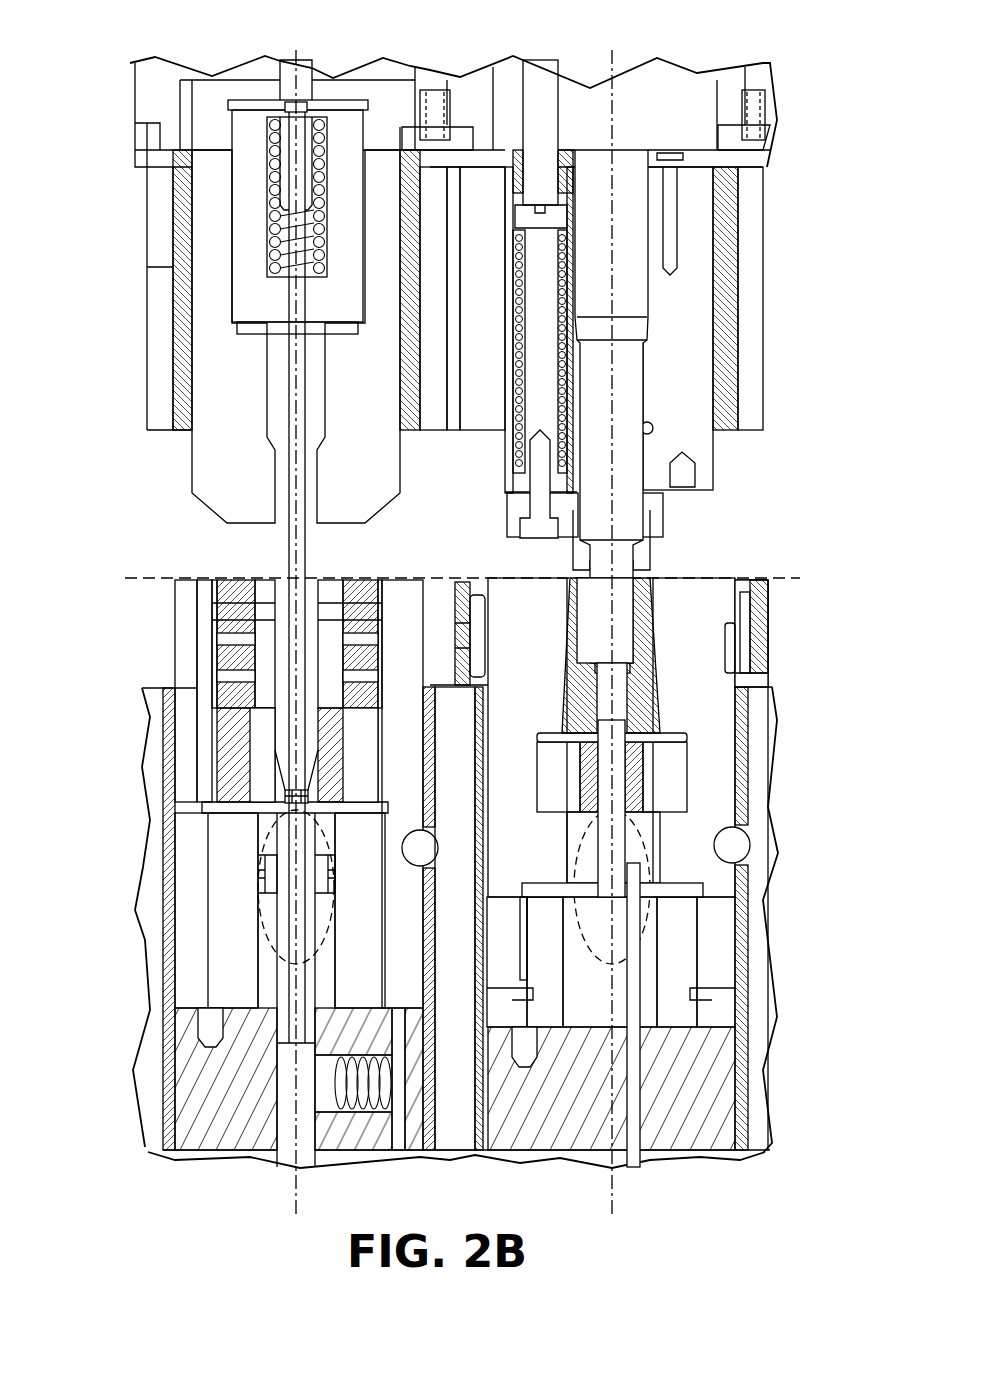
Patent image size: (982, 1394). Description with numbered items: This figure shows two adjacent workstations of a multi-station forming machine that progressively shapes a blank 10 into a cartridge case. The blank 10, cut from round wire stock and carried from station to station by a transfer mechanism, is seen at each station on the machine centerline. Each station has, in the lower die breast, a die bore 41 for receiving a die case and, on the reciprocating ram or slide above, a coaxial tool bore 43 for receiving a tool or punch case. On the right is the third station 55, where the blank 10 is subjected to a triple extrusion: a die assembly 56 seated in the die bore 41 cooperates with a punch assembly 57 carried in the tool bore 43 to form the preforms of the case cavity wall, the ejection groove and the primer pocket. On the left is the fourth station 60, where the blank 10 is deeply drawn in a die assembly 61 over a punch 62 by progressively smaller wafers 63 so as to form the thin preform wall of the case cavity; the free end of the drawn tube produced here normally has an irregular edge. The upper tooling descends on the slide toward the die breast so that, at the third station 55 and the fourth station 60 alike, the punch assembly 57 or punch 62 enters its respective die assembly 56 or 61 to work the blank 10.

The blank 10 is at (282, 793).
The die bore 41 is at (190, 908).
The tool bore 43 is at (203, 375).
The third station 55 is at (612, 1192).
The die assembly 56 is at (643, 692).
The punch assembly 57 is at (625, 565).
The fourth station 60 is at (296, 1192).
The die assembly 61 is at (217, 735).
The punch 62 is at (277, 547).
The wafers 63 is at (240, 672).